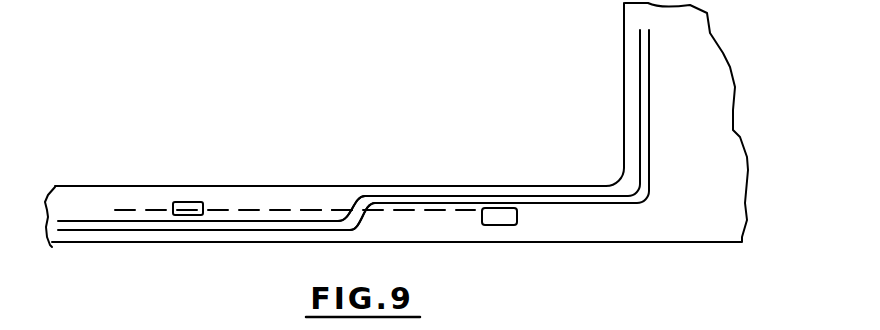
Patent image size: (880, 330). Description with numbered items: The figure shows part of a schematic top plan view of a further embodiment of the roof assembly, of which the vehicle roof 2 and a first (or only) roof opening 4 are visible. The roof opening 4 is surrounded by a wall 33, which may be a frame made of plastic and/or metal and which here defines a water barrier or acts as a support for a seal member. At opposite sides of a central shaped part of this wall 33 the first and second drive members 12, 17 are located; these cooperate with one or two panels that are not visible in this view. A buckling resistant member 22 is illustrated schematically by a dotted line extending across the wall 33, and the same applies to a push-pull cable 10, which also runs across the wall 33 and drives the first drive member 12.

The housing 2 is at (55, 200).
The roof opening 4 is at (623, 38).
The push-pull cable 10 is at (126, 210).
The first drive member 12 is at (190, 207).
The second drive member 17 is at (498, 208).
The buckling resistant member 22 is at (320, 207).
The wall 33 is at (388, 197).